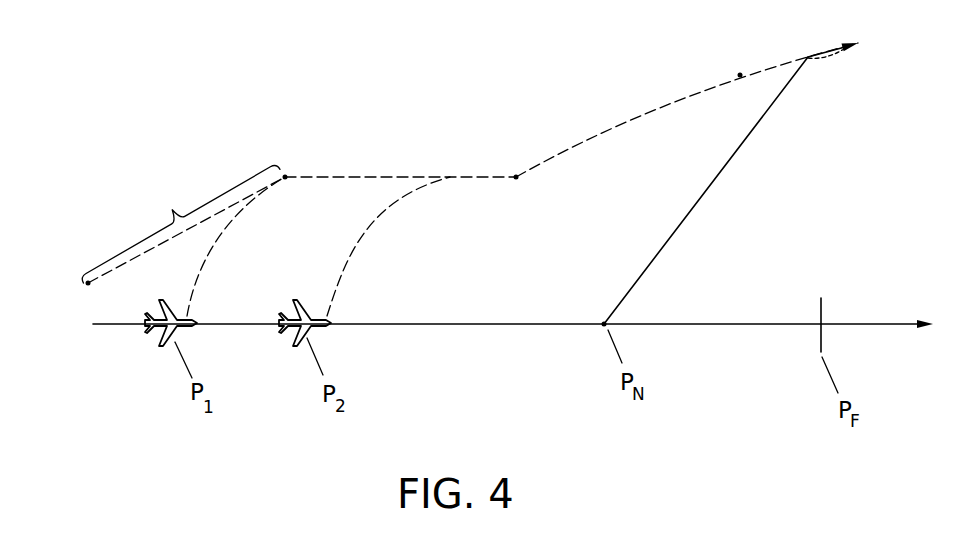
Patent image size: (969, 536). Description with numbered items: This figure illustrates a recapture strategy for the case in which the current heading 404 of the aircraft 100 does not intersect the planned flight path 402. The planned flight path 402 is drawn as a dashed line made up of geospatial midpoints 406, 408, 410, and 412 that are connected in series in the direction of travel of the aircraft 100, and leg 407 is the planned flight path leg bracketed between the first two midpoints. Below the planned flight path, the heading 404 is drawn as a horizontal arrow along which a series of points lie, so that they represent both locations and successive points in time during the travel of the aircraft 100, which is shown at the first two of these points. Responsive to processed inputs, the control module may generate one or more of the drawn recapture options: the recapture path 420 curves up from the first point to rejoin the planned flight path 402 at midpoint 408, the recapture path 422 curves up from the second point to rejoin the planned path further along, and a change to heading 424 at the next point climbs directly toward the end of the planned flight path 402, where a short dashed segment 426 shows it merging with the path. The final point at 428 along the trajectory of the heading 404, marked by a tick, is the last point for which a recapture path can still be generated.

The aircraft 100 is at (148, 331).
The planned flight path 402 is at (635, 120).
The current heading 404 is at (425, 325).
The geospatial midpoint 406 is at (88, 284).
The planned flight path leg 407 is at (177, 218).
The geospatial midpoint 408 is at (287, 176).
The geospatial midpoint 410 is at (516, 175).
The geospatial midpoint 412 is at (740, 73).
The recapture path 420 is at (213, 250).
The recapture path 422 is at (352, 253).
The change to heading 424 is at (688, 215).
The trajectory convergence segment 426 is at (812, 62).
The final point 428 is at (861, 286).